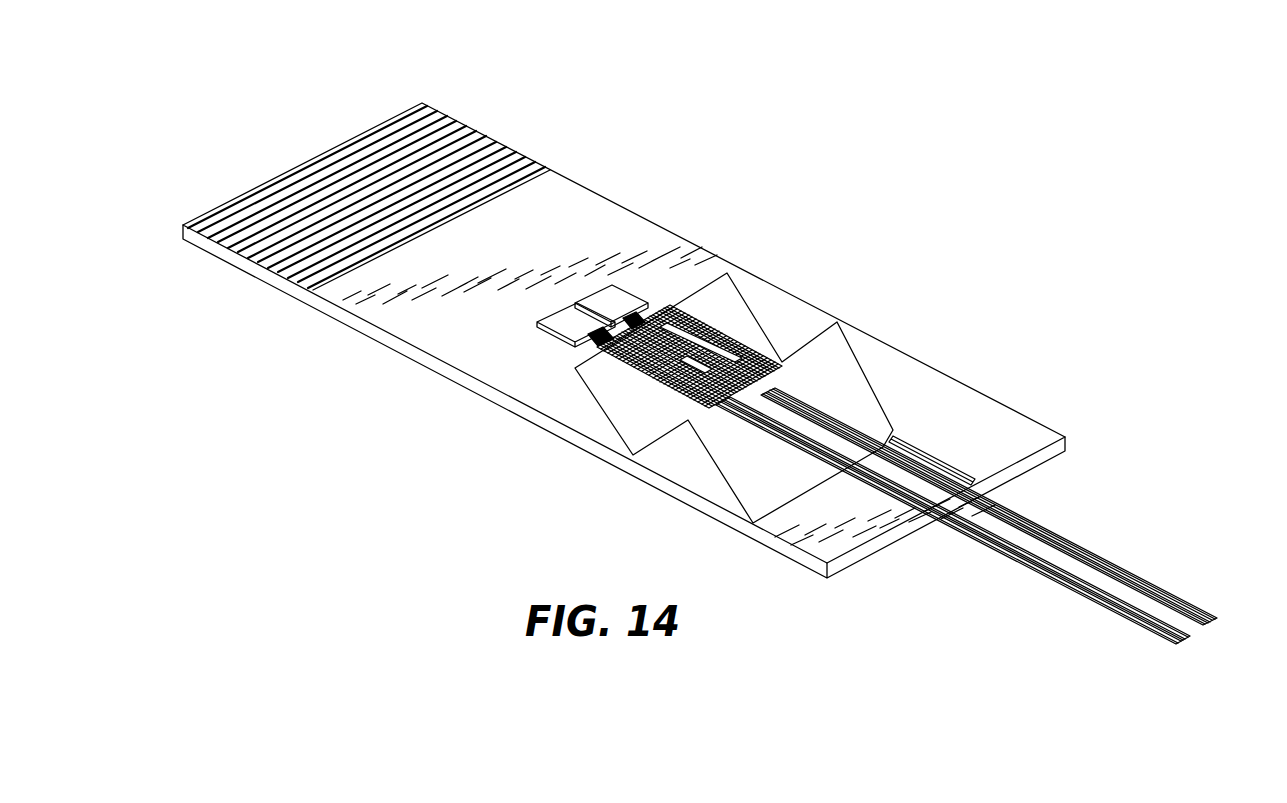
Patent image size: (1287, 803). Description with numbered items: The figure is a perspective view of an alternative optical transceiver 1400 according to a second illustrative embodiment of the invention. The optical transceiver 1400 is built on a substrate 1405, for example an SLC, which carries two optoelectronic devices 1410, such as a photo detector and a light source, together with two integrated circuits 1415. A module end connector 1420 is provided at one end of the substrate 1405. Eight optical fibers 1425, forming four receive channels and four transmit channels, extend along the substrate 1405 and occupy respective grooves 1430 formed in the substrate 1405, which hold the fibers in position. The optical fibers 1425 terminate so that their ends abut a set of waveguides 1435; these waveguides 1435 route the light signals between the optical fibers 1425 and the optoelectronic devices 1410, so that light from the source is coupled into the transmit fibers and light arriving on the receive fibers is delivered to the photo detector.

The optical transceiver 1400 is at (790, 123).
The substrate 1405 is at (508, 457).
The optoelectronic devices 1410 is at (664, 308).
The integrated circuits 1415 is at (541, 346).
The module end connector 1420 is at (493, 130).
The optical fibers 1425 is at (1125, 548).
The grooves 1430 is at (945, 452).
The waveguides 1435 is at (828, 390).